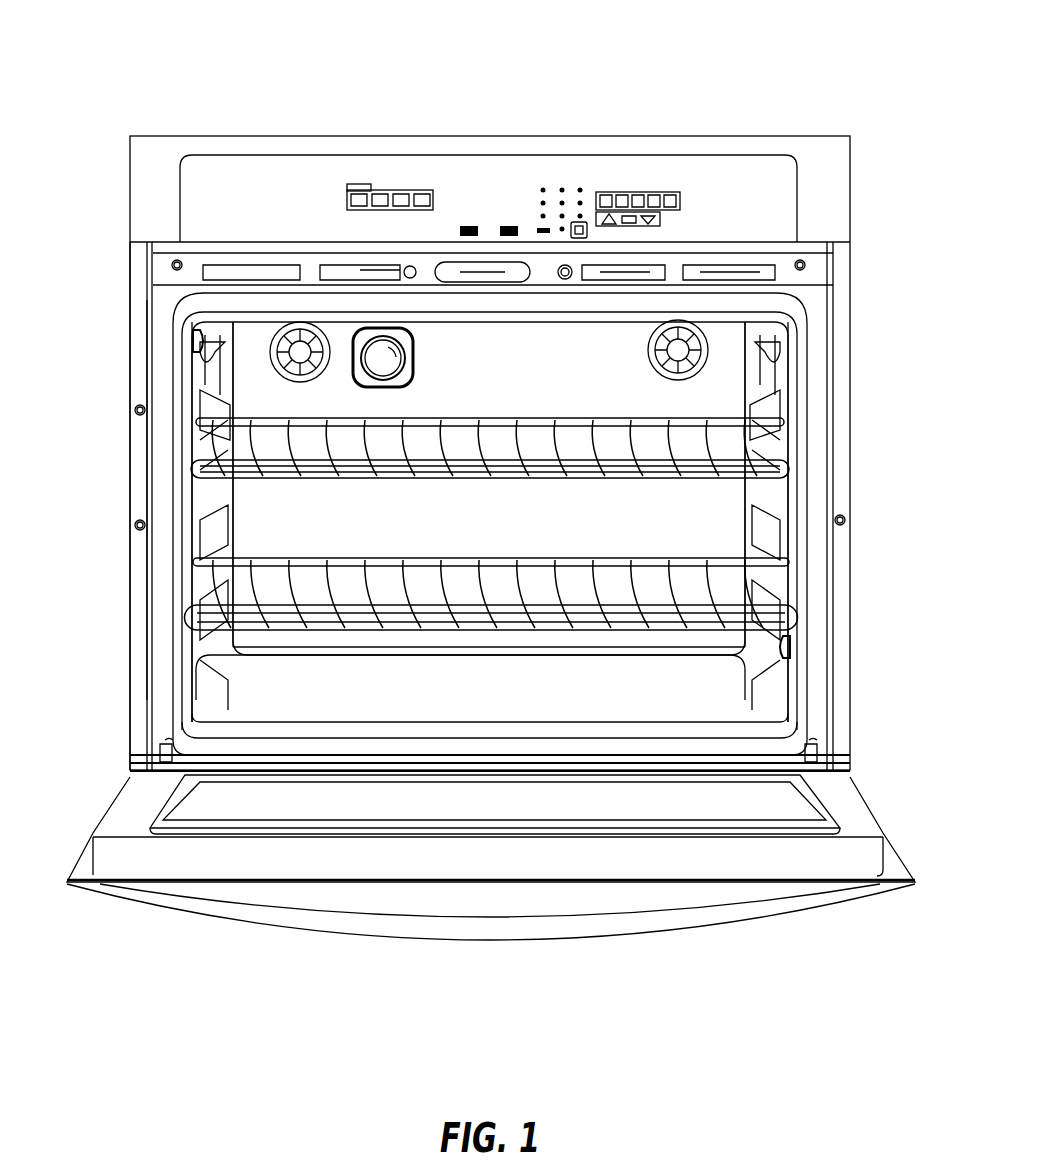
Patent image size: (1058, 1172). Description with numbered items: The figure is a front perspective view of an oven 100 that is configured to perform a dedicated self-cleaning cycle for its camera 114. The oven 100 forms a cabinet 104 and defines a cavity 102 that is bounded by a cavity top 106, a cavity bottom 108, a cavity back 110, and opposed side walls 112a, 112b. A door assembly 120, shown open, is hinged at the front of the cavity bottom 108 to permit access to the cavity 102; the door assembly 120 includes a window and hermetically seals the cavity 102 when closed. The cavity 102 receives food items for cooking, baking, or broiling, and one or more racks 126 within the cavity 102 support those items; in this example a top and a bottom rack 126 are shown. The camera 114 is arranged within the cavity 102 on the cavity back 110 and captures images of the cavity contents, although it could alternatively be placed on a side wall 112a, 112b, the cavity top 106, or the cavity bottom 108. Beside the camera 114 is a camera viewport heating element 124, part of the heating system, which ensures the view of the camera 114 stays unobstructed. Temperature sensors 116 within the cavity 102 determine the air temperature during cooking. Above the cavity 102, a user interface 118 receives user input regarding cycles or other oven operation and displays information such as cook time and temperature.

The oven 100 is at (150, 78).
The cavity 102 is at (313, 522).
The cabinet 104 is at (146, 405).
The cavity top 106 is at (580, 292).
The cavity bottom 108 is at (575, 705).
The cavity back 110 is at (590, 373).
The side wall 112a is at (800, 385).
The side wall 112b is at (185, 367).
The camera 114 is at (368, 337).
The temperature sensor 116 is at (192, 340).
The user interface 118 is at (575, 172).
The door assembly 120 is at (857, 850).
The camera viewport heating element 124 is at (353, 340).
The rack 126 is at (780, 460).